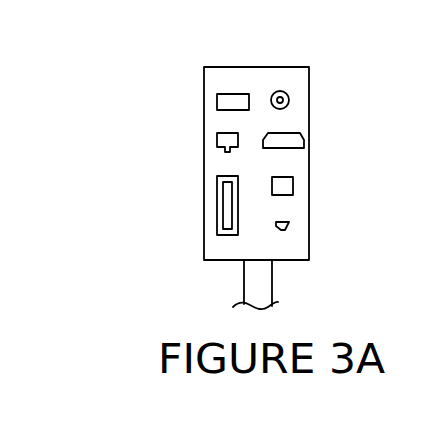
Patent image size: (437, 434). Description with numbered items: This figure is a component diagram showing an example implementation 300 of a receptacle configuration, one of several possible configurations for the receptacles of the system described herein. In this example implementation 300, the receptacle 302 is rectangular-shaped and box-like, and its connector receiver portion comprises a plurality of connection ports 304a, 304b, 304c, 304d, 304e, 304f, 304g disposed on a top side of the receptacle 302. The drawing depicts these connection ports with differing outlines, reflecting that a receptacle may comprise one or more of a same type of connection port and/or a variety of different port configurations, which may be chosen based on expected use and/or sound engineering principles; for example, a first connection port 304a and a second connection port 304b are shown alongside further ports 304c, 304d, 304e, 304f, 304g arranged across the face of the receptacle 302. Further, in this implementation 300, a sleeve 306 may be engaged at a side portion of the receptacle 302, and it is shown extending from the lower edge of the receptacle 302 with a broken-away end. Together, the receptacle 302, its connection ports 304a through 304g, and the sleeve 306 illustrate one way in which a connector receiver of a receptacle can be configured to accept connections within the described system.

The example implementation 300 is at (172, 55).
The receptacle 302 is at (309, 175).
The connection port 304a is at (217, 96).
The connection port 304b is at (217, 136).
The connection port 304c is at (217, 199).
The connection port 304d is at (289, 99).
The connection port 304e is at (300, 133).
The connection port 304f is at (293, 189).
The connection port 304g is at (284, 231).
The sleeve 306 is at (272, 278).